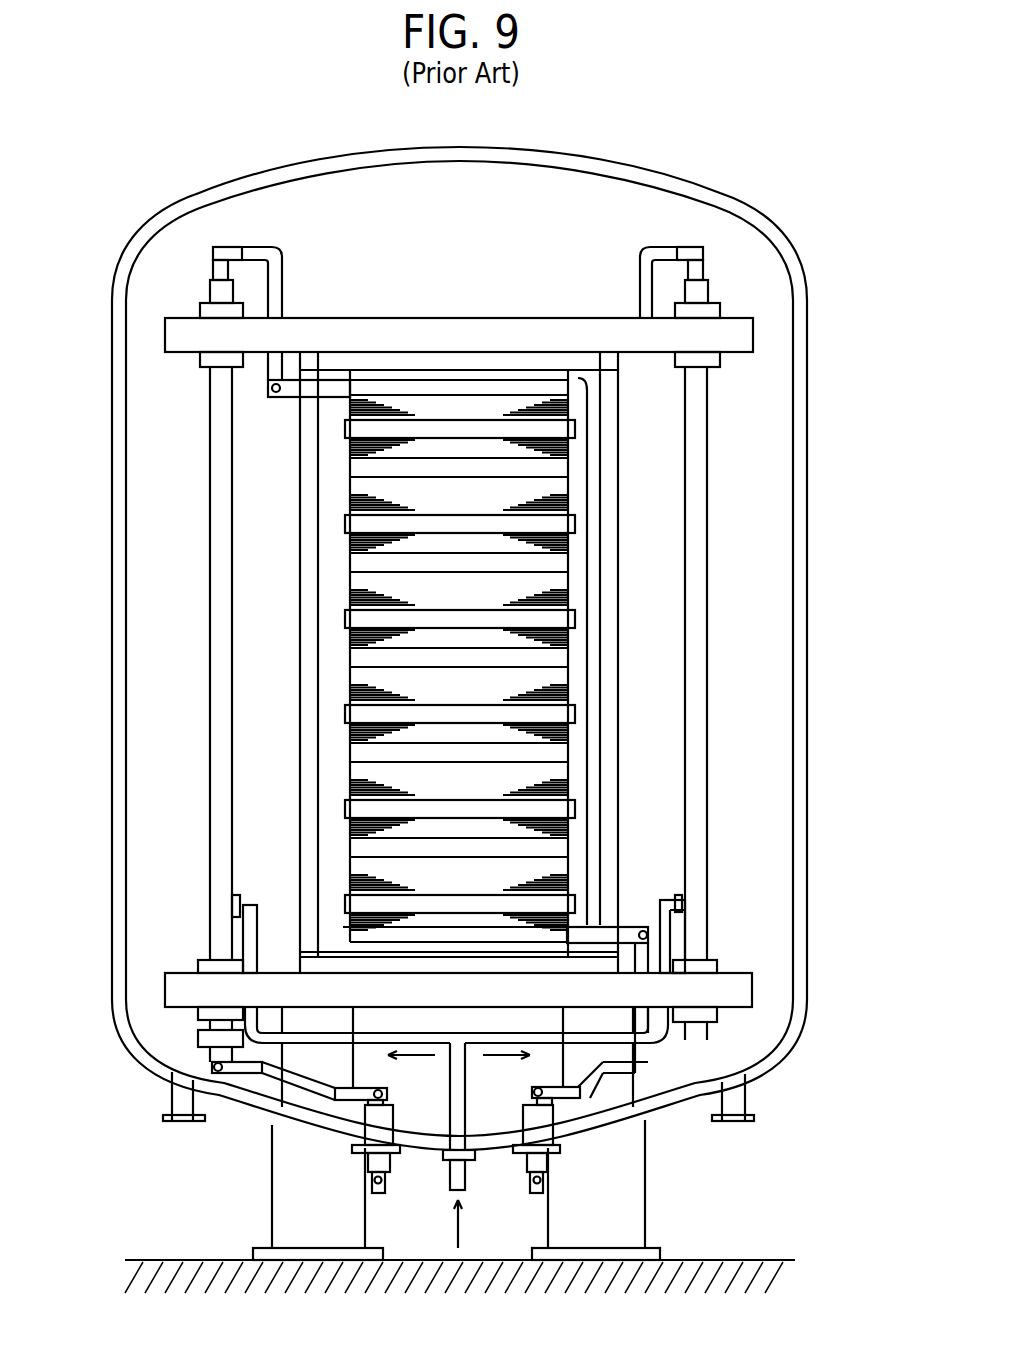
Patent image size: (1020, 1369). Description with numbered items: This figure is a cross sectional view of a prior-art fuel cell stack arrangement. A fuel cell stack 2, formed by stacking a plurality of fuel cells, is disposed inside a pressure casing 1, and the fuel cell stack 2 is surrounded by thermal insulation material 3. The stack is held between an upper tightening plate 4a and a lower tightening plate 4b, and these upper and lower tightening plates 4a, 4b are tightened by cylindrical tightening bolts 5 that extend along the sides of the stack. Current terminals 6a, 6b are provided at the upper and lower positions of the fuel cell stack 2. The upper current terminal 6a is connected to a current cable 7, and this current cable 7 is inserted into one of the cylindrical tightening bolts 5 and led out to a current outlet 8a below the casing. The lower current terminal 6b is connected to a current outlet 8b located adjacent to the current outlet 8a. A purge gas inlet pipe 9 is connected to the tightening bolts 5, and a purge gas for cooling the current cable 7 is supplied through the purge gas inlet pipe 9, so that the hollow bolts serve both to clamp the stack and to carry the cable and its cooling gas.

The pressure casing 1 is at (803, 413).
The fuel cell stack 2 is at (587, 600).
The thermal insulation material 3 is at (300, 698).
The upper tightening plate 4a is at (745, 335).
The lower tightening plate 4b is at (745, 988).
The cylindrical tightening bolts 5 is at (215, 542).
The current terminal 6a is at (283, 398).
The current terminal 6b is at (628, 937).
The current cable 7 is at (213, 264).
The current outlet 8a is at (387, 1118).
The current outlet 8b is at (543, 1162).
The purge gas inlet pipe 9 is at (460, 1100).